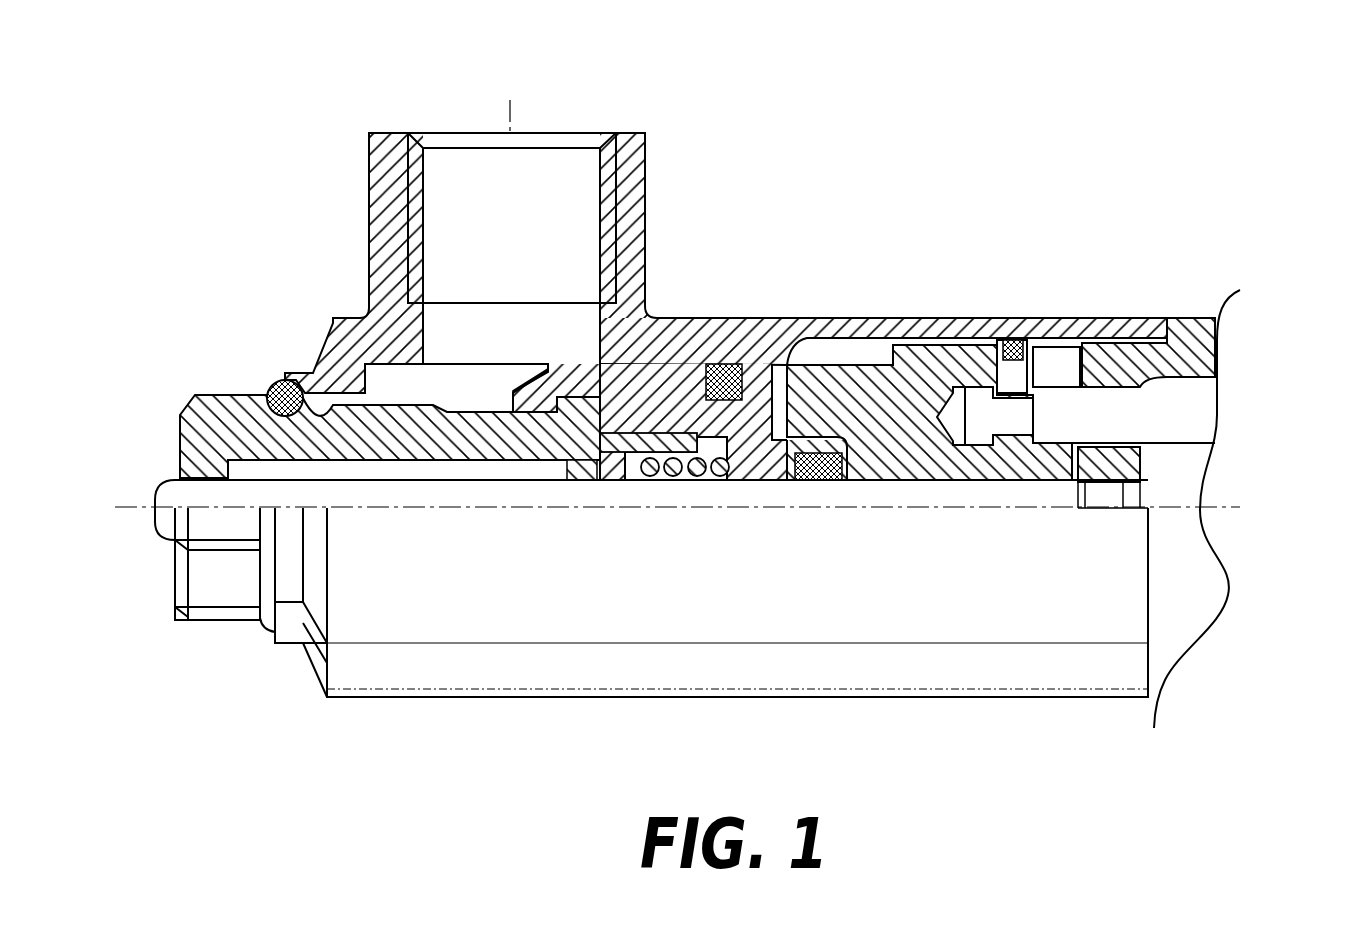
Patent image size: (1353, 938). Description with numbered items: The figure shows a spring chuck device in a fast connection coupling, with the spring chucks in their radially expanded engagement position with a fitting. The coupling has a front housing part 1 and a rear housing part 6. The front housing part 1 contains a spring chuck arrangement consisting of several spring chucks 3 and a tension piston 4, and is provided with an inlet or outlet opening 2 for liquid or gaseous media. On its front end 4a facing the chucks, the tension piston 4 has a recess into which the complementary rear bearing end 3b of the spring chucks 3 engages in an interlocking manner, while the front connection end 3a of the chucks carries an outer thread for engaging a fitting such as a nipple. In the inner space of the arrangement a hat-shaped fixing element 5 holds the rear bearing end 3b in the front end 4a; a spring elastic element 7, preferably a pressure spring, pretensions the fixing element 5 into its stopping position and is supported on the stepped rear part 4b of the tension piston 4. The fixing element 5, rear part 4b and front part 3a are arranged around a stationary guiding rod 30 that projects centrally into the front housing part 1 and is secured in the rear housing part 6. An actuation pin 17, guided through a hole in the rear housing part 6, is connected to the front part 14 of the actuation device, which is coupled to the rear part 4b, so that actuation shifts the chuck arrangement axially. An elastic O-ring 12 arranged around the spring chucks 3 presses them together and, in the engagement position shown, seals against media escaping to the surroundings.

The front housing part 1 is at (768, 318).
The inlet or outlet opening 2 is at (480, 157).
The spring chucks 3 is at (440, 453).
The front connection end 3a is at (207, 442).
The rear bearing end 3b is at (573, 405).
The tension piston 4 is at (668, 318).
The front end of the tension piston 4a is at (545, 368).
The stepped rear part of the tension piston 4b is at (767, 470).
The hat-shaped fixing element 5 is at (613, 470).
The rear housing part 6 is at (1193, 318).
The spring elastic element 7 is at (677, 470).
The elastic O-ring 12 is at (267, 380).
The front part of the actuation device 14 is at (927, 363).
The actuation pin 17 is at (1173, 423).
The guiding rod 30 is at (283, 493).